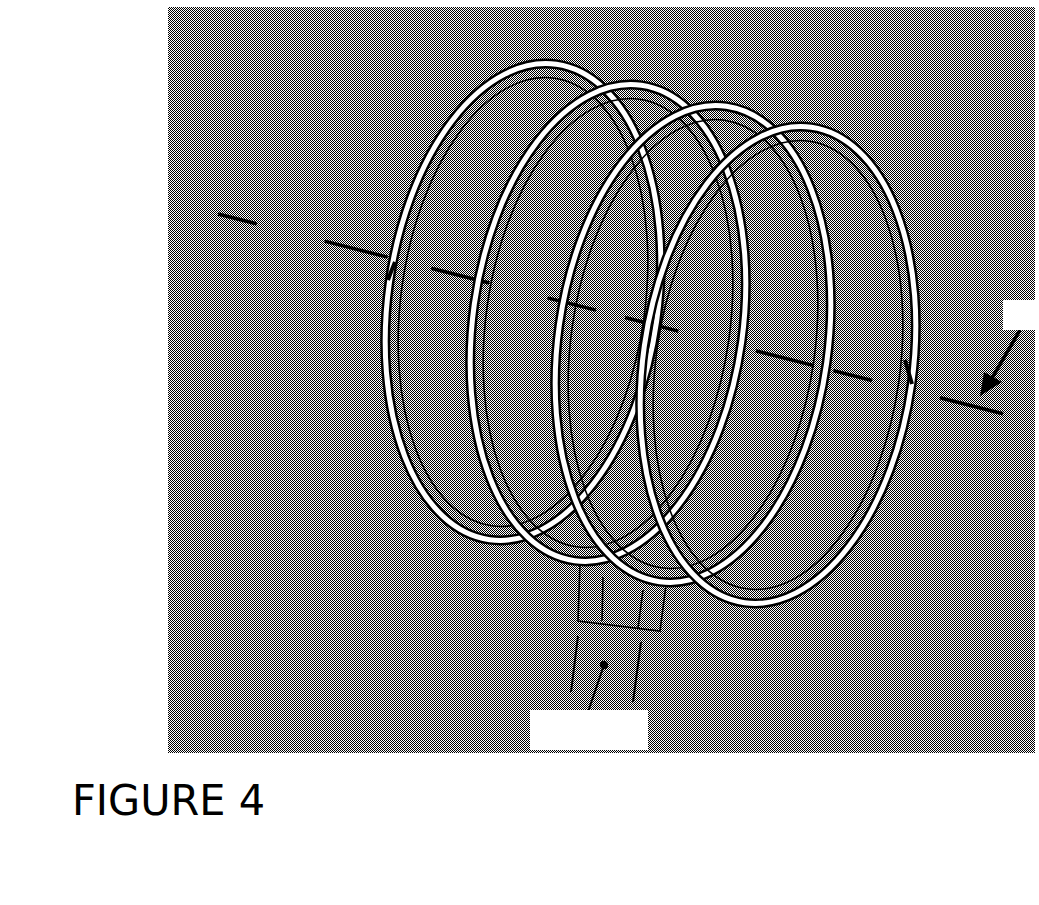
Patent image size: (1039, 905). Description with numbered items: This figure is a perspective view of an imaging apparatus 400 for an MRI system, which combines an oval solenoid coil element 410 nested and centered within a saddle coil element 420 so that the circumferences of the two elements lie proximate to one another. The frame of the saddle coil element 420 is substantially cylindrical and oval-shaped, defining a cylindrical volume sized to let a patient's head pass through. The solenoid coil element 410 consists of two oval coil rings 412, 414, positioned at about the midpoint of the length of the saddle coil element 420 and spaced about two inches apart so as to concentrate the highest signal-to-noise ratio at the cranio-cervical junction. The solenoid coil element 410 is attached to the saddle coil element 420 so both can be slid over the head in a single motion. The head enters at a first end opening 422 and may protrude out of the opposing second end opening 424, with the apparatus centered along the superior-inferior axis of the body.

The imaging apparatus 400 is at (613, 384).
The solenoid coil element 410 is at (526, 362).
The coil ring 412 is at (530, 472).
The coil ring 414 is at (470, 444).
The saddle coil element 420 is at (590, 66).
The first end opening 422 is at (350, 272).
The second end opening 424 is at (880, 348).